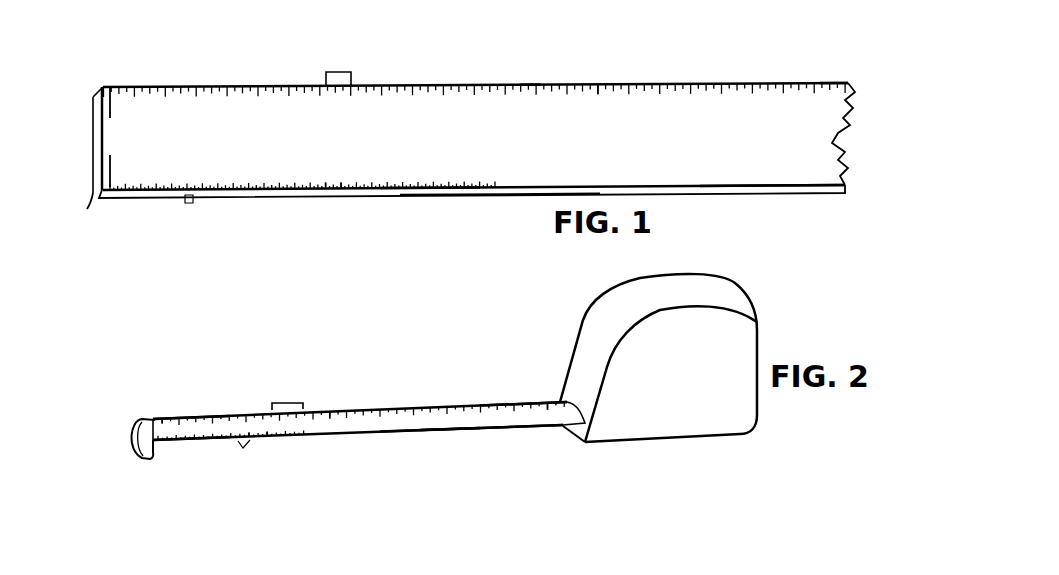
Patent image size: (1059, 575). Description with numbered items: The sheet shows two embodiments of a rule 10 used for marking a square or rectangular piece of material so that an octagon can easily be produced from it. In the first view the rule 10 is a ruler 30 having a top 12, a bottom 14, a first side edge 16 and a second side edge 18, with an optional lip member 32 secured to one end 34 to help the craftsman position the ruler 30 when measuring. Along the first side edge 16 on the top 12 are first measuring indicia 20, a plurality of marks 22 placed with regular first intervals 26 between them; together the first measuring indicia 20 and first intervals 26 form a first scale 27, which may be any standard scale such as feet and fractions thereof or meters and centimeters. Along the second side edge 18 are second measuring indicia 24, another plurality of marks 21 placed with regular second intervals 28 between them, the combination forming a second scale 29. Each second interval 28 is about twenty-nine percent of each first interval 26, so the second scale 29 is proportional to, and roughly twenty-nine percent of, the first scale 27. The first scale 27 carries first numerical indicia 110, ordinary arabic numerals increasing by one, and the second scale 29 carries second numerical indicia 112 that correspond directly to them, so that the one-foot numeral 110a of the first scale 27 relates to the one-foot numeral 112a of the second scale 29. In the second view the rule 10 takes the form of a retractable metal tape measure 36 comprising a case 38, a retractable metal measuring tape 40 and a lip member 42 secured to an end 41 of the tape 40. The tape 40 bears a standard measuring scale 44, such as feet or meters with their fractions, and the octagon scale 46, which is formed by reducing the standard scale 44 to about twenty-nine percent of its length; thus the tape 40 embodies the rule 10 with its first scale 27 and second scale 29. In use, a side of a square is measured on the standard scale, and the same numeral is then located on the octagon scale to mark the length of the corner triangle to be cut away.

In FIG. 1, the rule 10 is at (472, 142).
In FIG. 2, the rule 10 is at (412, 419).
In FIG. 1, the top 12 is at (510, 136).
In FIG. 2, the top 12 is at (369, 444).
In FIG. 1, the bottom 14 is at (486, 206).
In FIG. 1, the first side edge 16 is at (854, 59).
In FIG. 2, the first side edge 16 is at (517, 373).
In FIG. 1, the second side edge 18 is at (772, 215).
In FIG. 2, the second side edge 18 is at (491, 453).
In FIG. 1, the first measuring indicia 20 is at (475, 69).
In FIG. 2, the first measuring indicia 20 is at (363, 396).
In FIG. 1, the marks 21 is at (337, 209).
In FIG. 2, the marks 21 is at (269, 466).
In FIG. 1, the marks 22 is at (476, 68).
In FIG. 2, the marks 22 is at (365, 399).
In FIG. 1, the second measuring indicia 24 is at (302, 208).
In FIG. 2, the second measuring indicia 24 is at (237, 472).
In FIG. 1, the first intervals 26 is at (343, 63).
In FIG. 2, the first intervals 26 is at (286, 388).
In FIG. 1, the first scale 27 is at (517, 49).
In FIG. 1, the second intervals 28 is at (185, 218).
In FIG. 2, the second intervals 28 is at (241, 461).
In FIG. 1, the second scale 29 is at (430, 222).
In FIG. 1, the ruler 30 is at (500, 233).
In FIG. 1, the lip member 32 is at (73, 230).
In FIG. 1, the end 34 is at (71, 140).
In FIG. 2, the retractable metal tape measure 36 is at (512, 476).
In FIG. 2, the case 38 is at (658, 358).
In FIG. 2, the retractable metal measuring tape 40 is at (430, 453).
In FIG. 2, the end 41 is at (105, 427).
In FIG. 2, the lip member 42 is at (111, 448).
In FIG. 2, the standard measuring scale 44 is at (186, 384).
In FIG. 2, the octagon scale 46 is at (191, 467).
In FIG. 1, the first numerical indicia 110 is at (648, 72).
In FIG. 2, the first numerical indicia 110 is at (221, 379).
In FIG. 1, the 1 foot indicium 110a is at (549, 86).
In FIG. 2, the 1 foot indicium 110a is at (533, 358).
In FIG. 1, the second numerical indicia 112 is at (304, 202).
In FIG. 2, the second numerical indicia 112 is at (195, 479).
In FIG. 1, the 1 ft indicium 112a is at (320, 209).
In FIG. 2, the 1 ft indicium 112a is at (322, 462).